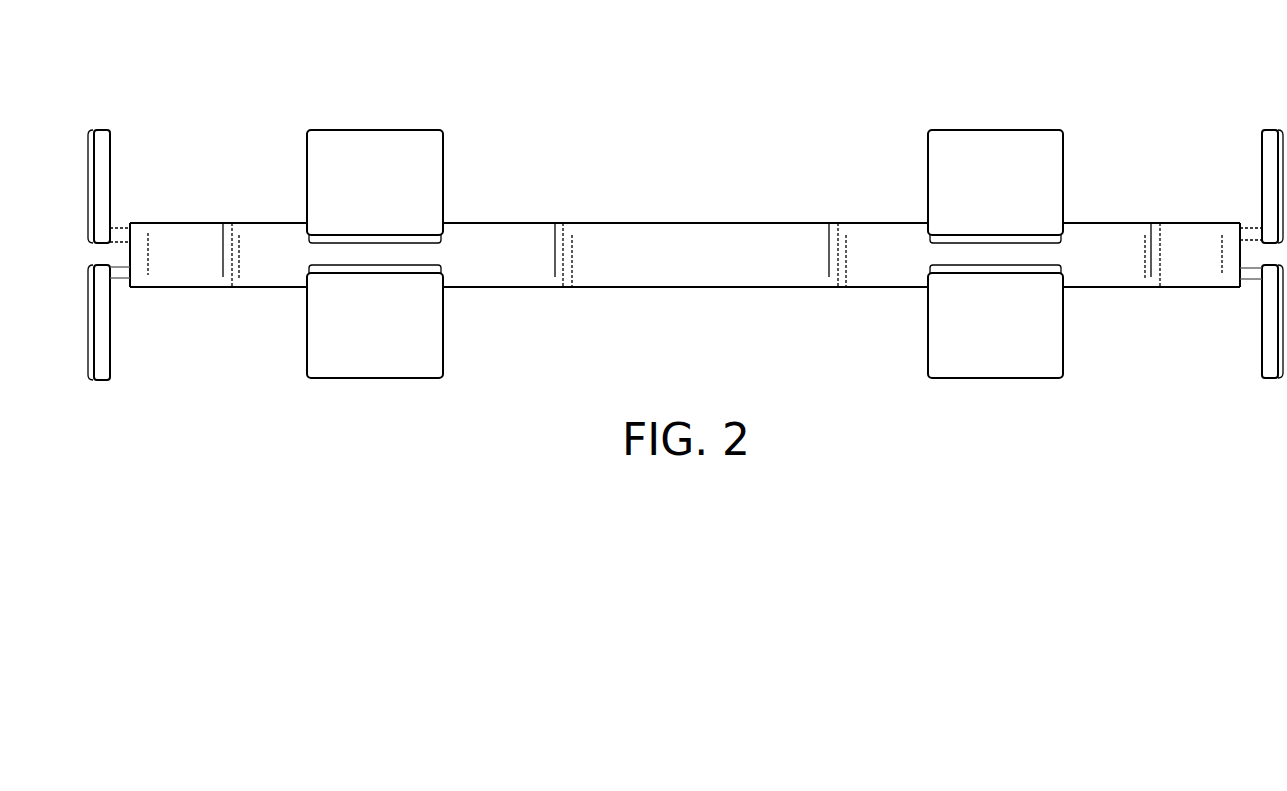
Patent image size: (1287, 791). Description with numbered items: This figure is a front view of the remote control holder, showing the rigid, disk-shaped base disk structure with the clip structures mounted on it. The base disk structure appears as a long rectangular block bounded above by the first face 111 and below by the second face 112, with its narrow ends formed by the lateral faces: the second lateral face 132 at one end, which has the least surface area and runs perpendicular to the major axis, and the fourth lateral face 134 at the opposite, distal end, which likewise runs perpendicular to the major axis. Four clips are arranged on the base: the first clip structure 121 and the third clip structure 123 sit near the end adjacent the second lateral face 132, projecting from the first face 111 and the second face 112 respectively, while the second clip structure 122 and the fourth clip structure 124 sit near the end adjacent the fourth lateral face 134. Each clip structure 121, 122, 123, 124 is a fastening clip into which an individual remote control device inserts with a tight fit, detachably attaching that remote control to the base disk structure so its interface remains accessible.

The first face 111 is at (686, 223).
The second face 112 is at (685, 287).
The first clip structure 121 is at (338, 157).
The second clip structure 122 is at (1268, 157).
The third clip structure 123 is at (345, 358).
The fourth clip structure 124 is at (1268, 357).
The second lateral face 132 is at (130, 253).
The fourth lateral face 134 is at (603, 262).